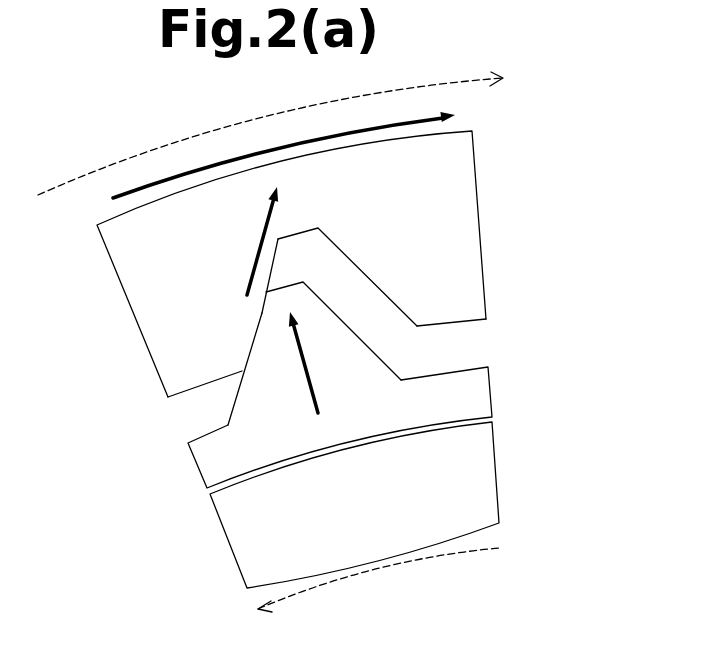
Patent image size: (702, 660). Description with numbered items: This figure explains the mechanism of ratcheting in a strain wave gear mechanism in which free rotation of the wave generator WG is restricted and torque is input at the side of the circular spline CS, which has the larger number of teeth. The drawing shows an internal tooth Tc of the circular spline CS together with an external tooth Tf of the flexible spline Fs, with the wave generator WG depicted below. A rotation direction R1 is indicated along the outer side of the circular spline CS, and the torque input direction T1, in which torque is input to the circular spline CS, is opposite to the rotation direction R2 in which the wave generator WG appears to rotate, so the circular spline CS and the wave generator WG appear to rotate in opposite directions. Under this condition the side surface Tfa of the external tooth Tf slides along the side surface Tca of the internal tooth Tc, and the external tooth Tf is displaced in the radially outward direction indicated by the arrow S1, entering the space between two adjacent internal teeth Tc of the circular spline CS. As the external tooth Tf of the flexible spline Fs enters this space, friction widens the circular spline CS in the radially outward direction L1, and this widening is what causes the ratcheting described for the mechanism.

The circular spline CS is at (478, 166).
The internal tooth Tc is at (461, 312).
The external tooth Tf is at (362, 340).
The side surface of internal tooth Tca is at (256, 317).
The side surface of external tooth Tfa is at (246, 347).
The flexible spline Fs is at (492, 389).
The wave generator WG is at (496, 454).
The rotation direction R1 is at (312, 106).
The torque input direction T1 is at (342, 129).
The radially outward direction L1 is at (263, 230).
The radially outward direction of external tooth S1 is at (320, 399).
The rotation direction of wave generator R2 is at (402, 566).